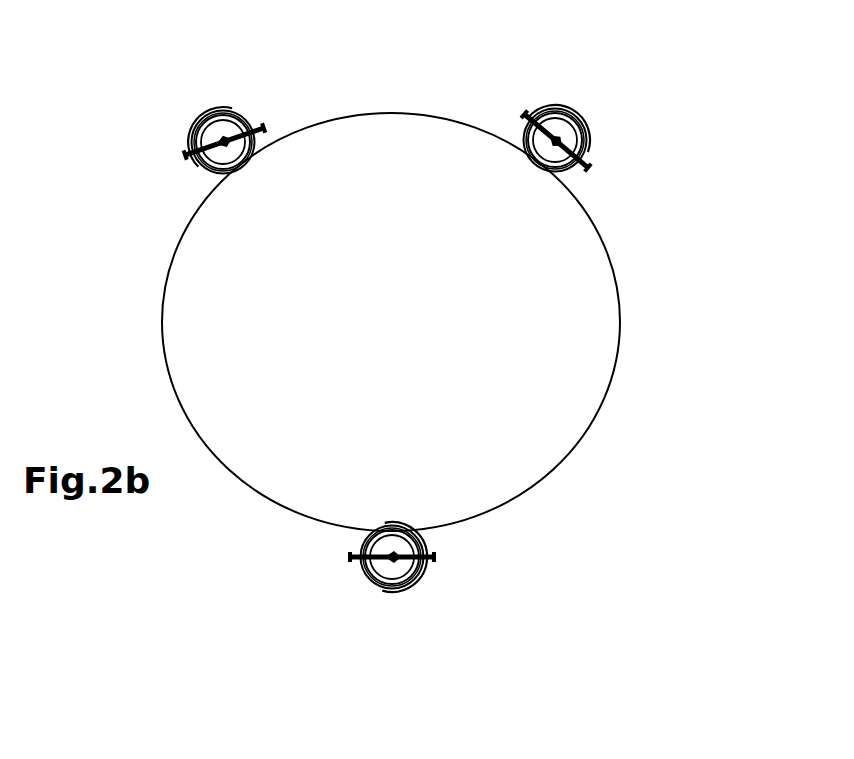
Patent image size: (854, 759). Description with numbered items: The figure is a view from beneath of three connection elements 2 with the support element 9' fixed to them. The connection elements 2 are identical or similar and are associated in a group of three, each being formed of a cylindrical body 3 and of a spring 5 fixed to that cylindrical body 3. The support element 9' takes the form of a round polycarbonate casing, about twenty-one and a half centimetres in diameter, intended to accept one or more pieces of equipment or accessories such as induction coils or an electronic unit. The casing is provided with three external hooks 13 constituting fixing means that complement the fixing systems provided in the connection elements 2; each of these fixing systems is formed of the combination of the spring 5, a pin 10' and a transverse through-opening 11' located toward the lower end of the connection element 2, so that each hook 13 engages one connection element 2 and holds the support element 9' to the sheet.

The connection element 2 is at (247, 108).
The cylindrical body 3 is at (214, 110).
The spring 5 is at (254, 139).
The support element 9' is at (430, 322).
The pin 10' is at (389, 319).
The transverse through-opening 11' is at (344, 349).
The external hook 13 is at (196, 162).